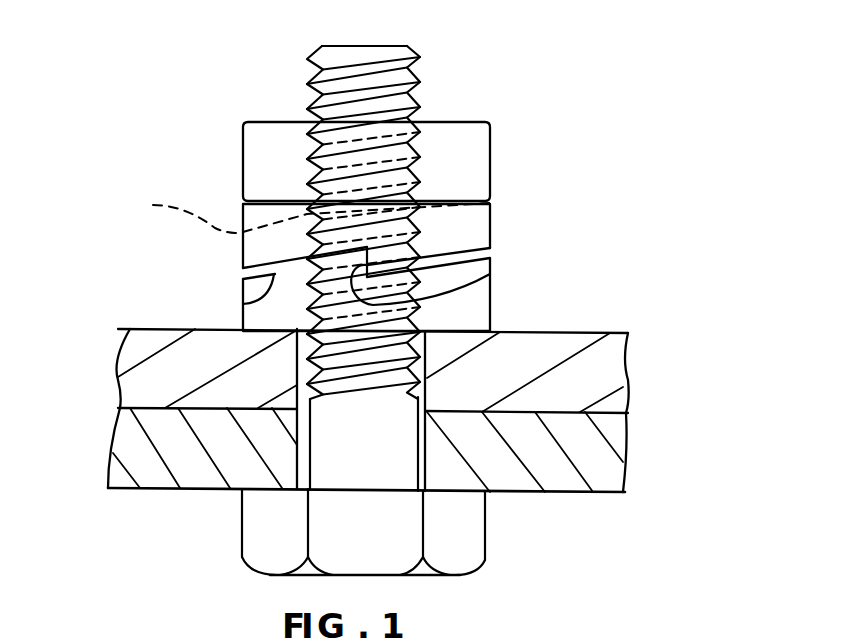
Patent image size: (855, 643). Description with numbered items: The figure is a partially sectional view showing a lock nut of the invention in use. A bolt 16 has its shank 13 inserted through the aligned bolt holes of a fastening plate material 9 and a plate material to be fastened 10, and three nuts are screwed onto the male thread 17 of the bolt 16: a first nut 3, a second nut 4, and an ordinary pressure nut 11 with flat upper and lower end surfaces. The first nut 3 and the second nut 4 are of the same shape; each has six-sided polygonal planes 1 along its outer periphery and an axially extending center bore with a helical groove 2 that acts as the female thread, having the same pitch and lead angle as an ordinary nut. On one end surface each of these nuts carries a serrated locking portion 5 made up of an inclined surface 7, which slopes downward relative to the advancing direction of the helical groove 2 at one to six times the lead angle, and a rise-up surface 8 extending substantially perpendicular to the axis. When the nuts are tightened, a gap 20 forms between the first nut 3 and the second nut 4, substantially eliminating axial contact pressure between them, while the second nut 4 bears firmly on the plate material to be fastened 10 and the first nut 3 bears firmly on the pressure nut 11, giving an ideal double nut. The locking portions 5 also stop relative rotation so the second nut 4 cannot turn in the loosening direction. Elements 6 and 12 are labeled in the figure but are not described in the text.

The six-sided polygonal planes 1 is at (393, 226).
The helical groove 2 is at (304, 209).
The first nut 3 is at (341, 196).
The second nut 4 is at (361, 284).
The locking portion 5 is at (492, 268).
The threaded bore 6 is at (462, 203).
The inclined surface 7 is at (243, 303).
The rise-up surface 8 is at (479, 271).
The fastening plate material 9 is at (625, 435).
The plate material to be fastened 10 is at (602, 332).
The pressure nut 11 is at (462, 120).
The bolt head 12 is at (409, 549).
The shank 13 is at (358, 463).
The bolt 16 is at (460, 580).
The male thread 17 is at (420, 56).
The gap 20 is at (243, 268).